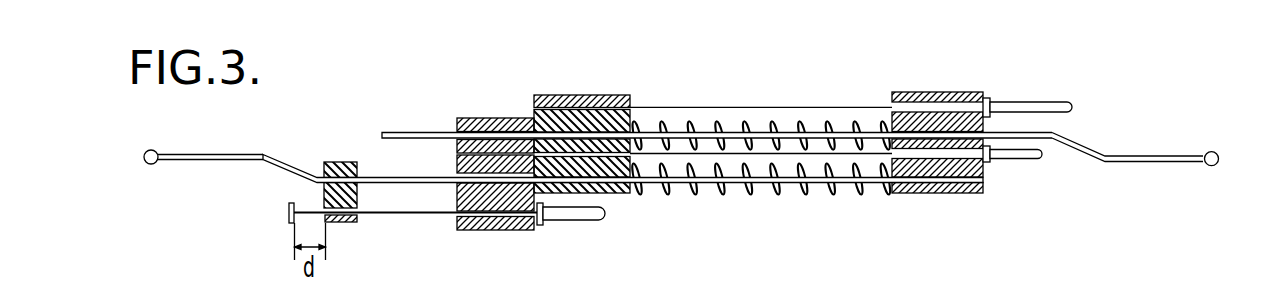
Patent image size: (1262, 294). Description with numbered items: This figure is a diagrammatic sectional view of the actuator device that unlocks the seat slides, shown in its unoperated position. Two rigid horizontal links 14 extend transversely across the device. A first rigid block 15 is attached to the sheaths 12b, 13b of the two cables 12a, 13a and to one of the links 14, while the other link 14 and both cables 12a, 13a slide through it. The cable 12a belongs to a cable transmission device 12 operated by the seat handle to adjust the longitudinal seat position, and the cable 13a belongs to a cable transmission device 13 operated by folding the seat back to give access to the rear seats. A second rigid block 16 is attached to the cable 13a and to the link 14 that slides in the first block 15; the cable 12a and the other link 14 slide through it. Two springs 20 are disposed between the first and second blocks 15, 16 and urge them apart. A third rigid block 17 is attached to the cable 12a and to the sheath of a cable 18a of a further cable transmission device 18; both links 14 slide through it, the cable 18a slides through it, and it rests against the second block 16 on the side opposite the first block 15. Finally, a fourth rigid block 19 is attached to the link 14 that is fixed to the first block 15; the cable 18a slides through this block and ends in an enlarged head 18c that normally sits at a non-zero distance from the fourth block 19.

The cable transmission device 12 is at (1008, 162).
The cable 12a is at (815, 154).
The sheath 12b is at (1023, 158).
The cable transmission device 13 is at (1008, 99).
The cable 13a is at (778, 107).
The sheath 13b is at (1038, 107).
The rigid horizontal link 14 is at (209, 162).
The first rigid block 15 is at (940, 193).
The second rigid block 16 is at (583, 96).
The third rigid block 17 is at (490, 230).
The cable transmission device 18 is at (407, 213).
The cable 18a is at (583, 221).
The enlarged head 18c is at (289, 213).
The fourth rigid block 19 is at (343, 162).
The spring 20 is at (714, 188).